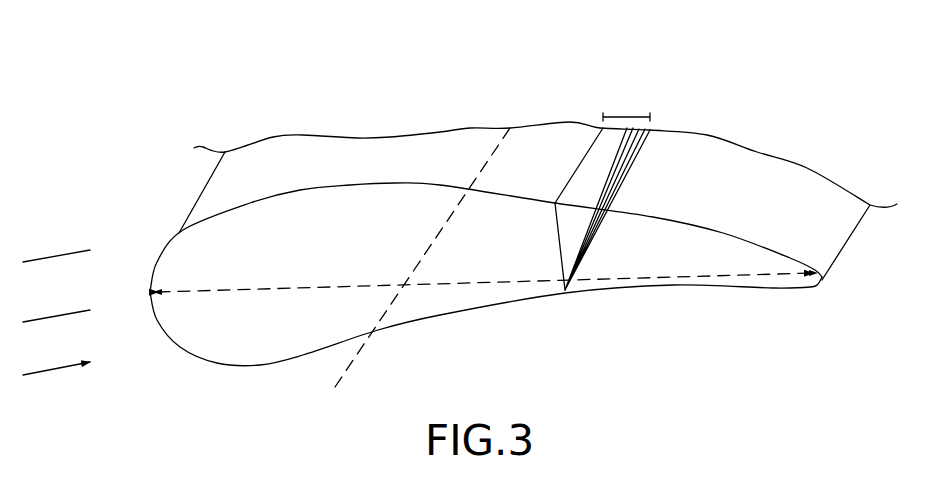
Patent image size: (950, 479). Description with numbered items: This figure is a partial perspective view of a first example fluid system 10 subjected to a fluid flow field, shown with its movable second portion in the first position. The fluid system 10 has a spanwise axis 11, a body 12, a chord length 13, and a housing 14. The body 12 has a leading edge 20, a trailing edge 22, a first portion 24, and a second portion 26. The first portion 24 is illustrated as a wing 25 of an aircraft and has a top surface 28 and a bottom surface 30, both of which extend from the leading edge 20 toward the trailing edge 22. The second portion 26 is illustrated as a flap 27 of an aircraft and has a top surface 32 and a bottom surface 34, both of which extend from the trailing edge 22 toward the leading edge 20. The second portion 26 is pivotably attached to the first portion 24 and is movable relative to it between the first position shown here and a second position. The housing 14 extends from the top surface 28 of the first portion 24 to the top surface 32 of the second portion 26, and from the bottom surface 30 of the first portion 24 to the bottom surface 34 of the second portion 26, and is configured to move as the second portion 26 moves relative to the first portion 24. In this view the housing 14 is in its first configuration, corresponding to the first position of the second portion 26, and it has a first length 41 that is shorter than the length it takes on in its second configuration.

The fluid system 10 is at (621, 46).
The spanwise axis 11 is at (345, 371).
The body 12 is at (159, 409).
The chord length 13 is at (797, 274).
The housing 14 is at (641, 99).
The leading edge 20 is at (128, 251).
The trailing edge 22 is at (857, 261).
The first portion 24 is at (385, 152).
The wing 25 is at (302, 146).
The second portion 26 is at (758, 159).
The flap 27 is at (710, 137).
The top surface 28 is at (442, 163).
The bottom surface 30 is at (303, 356).
The top surface 32 is at (730, 193).
The bottom surface 34 is at (669, 289).
The first length 41 is at (620, 114).